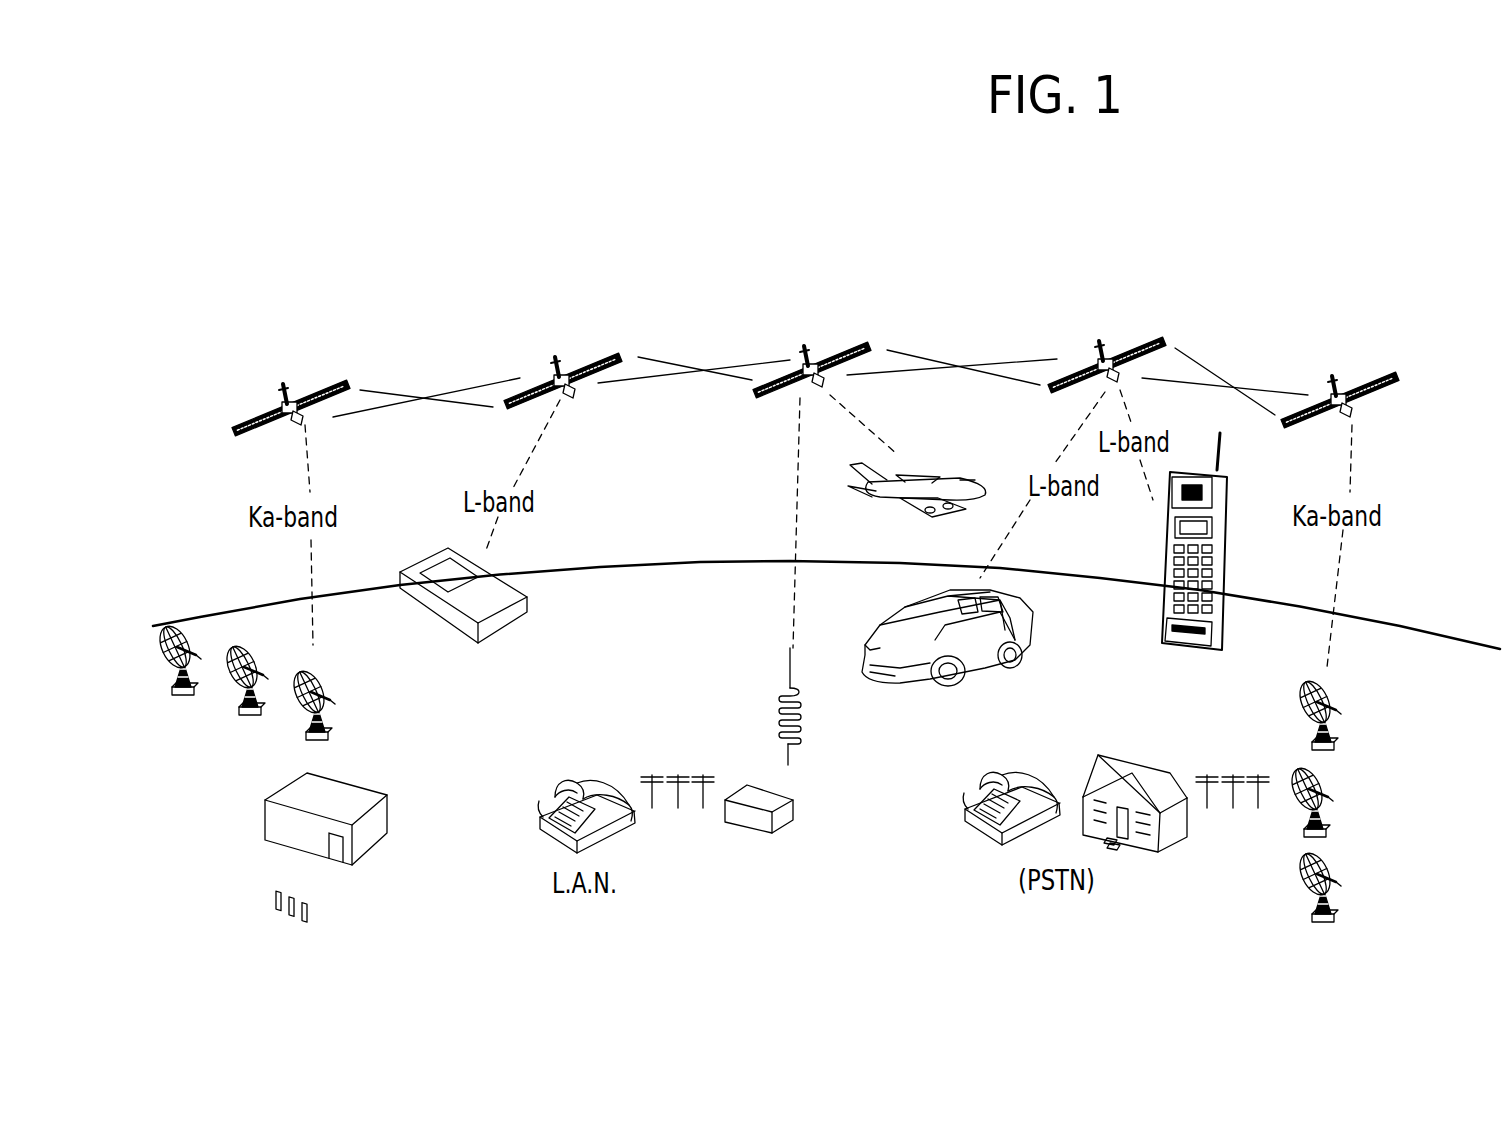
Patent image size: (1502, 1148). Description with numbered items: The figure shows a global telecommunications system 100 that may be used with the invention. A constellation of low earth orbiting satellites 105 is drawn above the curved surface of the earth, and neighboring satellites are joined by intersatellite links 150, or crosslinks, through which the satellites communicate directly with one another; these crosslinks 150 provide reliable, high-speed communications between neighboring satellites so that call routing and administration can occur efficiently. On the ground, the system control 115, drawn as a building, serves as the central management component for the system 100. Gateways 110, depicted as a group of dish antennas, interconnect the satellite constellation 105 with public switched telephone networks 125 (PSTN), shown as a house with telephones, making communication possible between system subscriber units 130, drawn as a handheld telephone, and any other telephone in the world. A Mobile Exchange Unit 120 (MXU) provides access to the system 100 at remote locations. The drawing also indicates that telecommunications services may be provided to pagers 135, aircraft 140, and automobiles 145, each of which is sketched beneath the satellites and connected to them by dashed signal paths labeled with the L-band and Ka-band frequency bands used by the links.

The system 100 is at (853, 161).
The low earth orbiting satellites 105 is at (315, 393).
The gateways 110 is at (1337, 877).
The system control 115 is at (377, 837).
The Mobile Exchange Units (MXU) 120 is at (793, 823).
The public switched telephone networks (PSTN) 125 is at (1170, 837).
The subscriber units 130 is at (1223, 572).
The pagers 135 is at (493, 640).
The aircraft 140 is at (963, 487).
The automobiles 145 is at (933, 668).
The intersatellite links (crosslinks) 150 is at (463, 388).